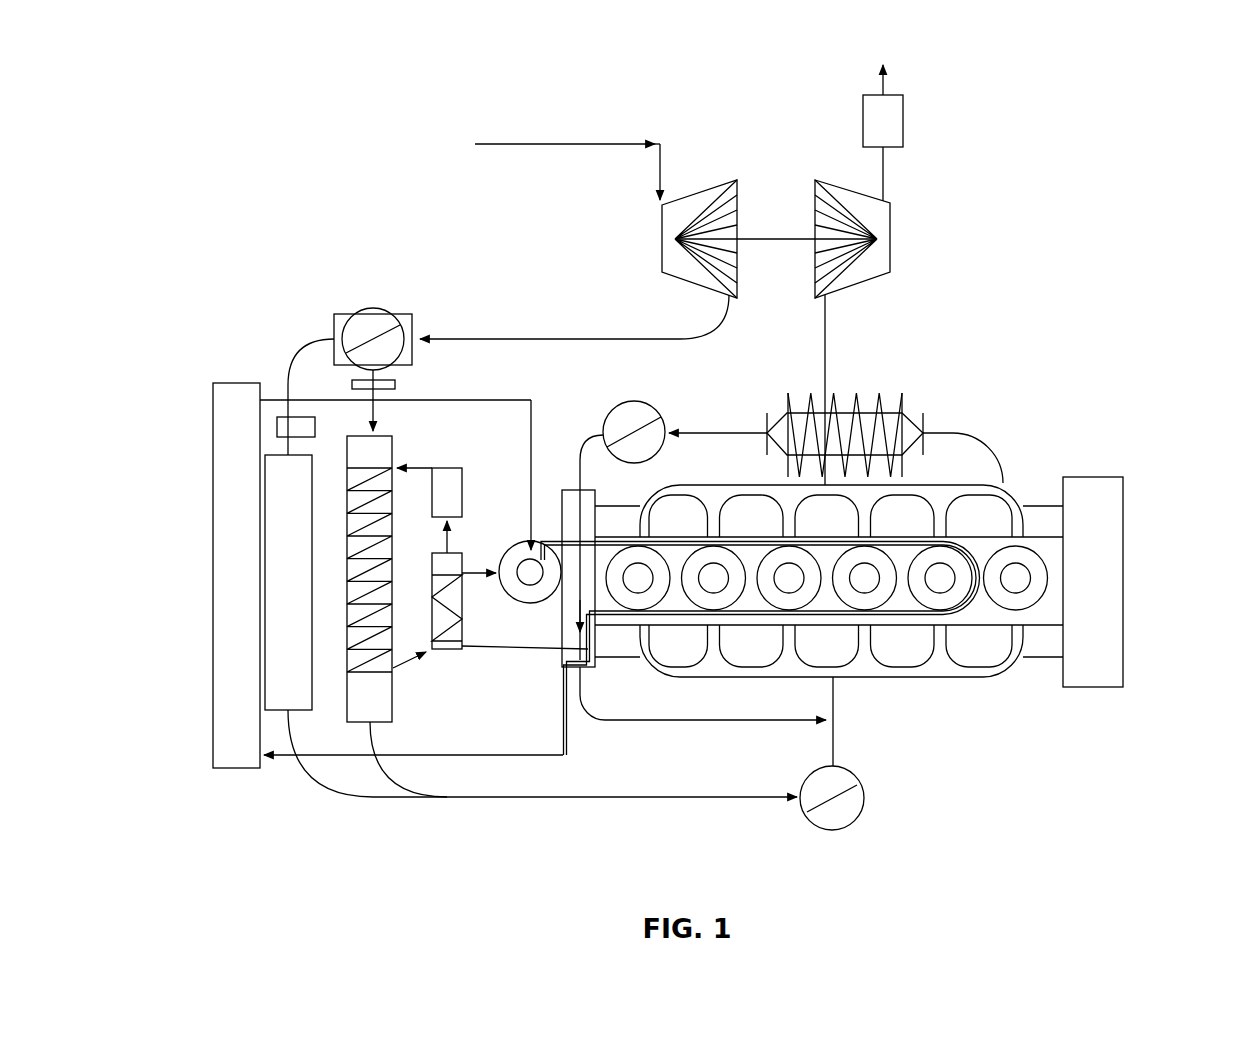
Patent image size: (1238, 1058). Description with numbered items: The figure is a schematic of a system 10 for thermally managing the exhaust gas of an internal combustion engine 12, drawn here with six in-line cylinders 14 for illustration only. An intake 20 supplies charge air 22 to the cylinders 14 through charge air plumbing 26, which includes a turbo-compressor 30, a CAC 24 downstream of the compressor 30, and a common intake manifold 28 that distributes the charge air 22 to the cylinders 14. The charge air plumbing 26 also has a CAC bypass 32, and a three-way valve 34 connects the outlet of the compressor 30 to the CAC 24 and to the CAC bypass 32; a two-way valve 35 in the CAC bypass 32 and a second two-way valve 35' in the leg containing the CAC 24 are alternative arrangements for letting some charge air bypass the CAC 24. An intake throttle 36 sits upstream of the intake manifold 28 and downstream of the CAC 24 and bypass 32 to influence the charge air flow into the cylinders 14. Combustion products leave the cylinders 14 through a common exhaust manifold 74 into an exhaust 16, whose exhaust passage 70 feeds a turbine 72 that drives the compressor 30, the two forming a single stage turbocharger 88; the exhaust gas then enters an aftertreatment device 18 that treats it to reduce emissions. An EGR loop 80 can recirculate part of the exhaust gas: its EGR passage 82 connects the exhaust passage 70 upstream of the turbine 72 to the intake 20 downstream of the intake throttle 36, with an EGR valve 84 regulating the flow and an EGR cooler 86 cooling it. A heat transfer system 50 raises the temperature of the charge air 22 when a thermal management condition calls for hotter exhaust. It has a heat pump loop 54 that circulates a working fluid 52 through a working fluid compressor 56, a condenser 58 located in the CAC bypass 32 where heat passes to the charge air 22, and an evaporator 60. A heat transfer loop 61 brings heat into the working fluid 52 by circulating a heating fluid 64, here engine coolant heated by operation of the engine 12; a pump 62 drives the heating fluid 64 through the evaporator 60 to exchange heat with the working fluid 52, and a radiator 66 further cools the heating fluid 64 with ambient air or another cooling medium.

The system 10 is at (1173, 247).
The internal combustion engine 12 is at (1119, 533).
The cylinders 14 is at (1048, 580).
The exhaust 16 is at (832, 350).
The aftertreatment device 18 is at (903, 118).
The intake 20 is at (682, 234).
The charge air 22 is at (483, 140).
The CAC 24 is at (290, 735).
The charge air plumbing 26 is at (399, 804).
The intake manifold 28 is at (927, 680).
The turbo-compressor 30 is at (688, 196).
The CAC bypass 32 is at (370, 413).
The three-way valve 34 is at (366, 312).
The two-way valve 35 is at (404, 373).
The second two-way valve 35' is at (234, 404).
The intake throttle 36 is at (865, 806).
The heat transfer system 50 is at (488, 769).
The working fluid 52 is at (353, 630).
The heat pump loop 54 is at (418, 665).
The working fluid compressor 56 is at (450, 490).
The condenser 58 is at (355, 480).
The evaporator 60 is at (462, 556).
The heat transfer loop 61 is at (533, 417).
The pump 62 is at (536, 600).
The heating fluid 64 is at (482, 400).
The radiator 66 is at (232, 540).
The exhaust passage 70 is at (824, 330).
The turbine 72 is at (892, 240).
The exhaust manifold 74 is at (1003, 485).
The EGR loop 80 is at (974, 397).
The EGR passage 82 is at (985, 443).
The EGR valve 84 is at (656, 407).
The EGR cooler 86 is at (897, 400).
The turbocharger 88 is at (929, 176).